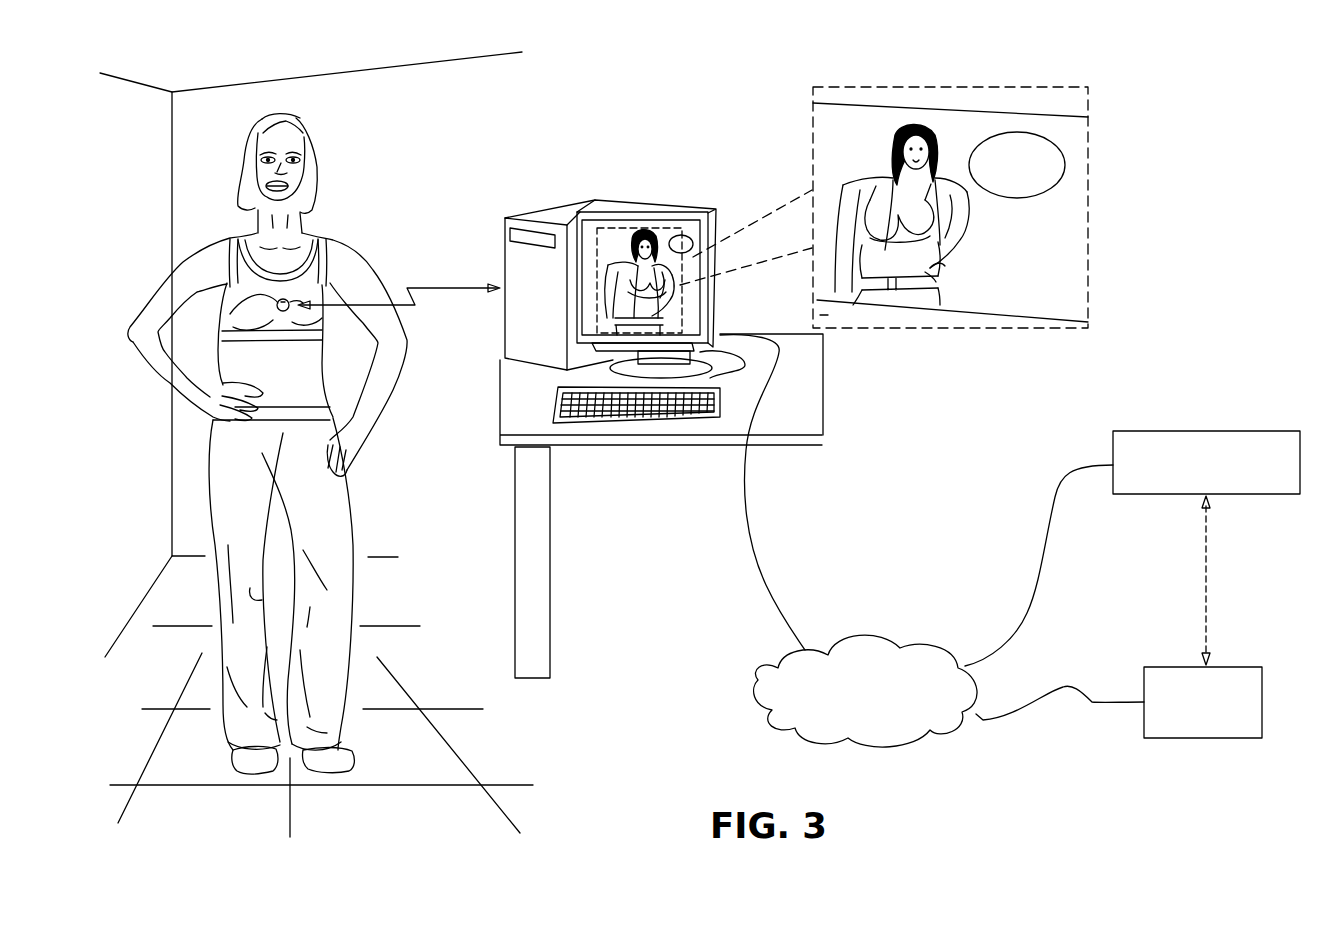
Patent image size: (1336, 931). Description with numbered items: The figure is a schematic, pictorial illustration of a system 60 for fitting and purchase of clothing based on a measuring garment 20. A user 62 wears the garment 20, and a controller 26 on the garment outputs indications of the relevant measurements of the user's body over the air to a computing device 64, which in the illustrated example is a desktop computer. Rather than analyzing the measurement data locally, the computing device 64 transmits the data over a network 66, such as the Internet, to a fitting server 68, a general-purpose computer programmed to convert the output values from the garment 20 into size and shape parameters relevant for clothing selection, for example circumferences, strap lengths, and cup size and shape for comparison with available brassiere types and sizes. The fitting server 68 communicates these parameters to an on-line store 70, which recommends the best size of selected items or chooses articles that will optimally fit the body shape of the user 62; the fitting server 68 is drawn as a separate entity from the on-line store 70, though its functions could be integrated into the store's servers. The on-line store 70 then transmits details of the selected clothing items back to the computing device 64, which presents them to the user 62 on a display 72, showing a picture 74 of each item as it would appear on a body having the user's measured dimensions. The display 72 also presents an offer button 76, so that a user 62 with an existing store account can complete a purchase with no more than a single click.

The system 60 is at (1219, 162).
The user 62 is at (213, 246).
The garment 20 is at (340, 263).
The controller 26 is at (228, 319).
The computing device 64 is at (708, 300).
The display 72 is at (642, 230).
The picture 74 is at (862, 149).
The offer button 76 is at (1063, 182).
The network 66 is at (889, 635).
The fitting server 68 is at (1187, 431).
The on-line store 70 is at (1168, 667).